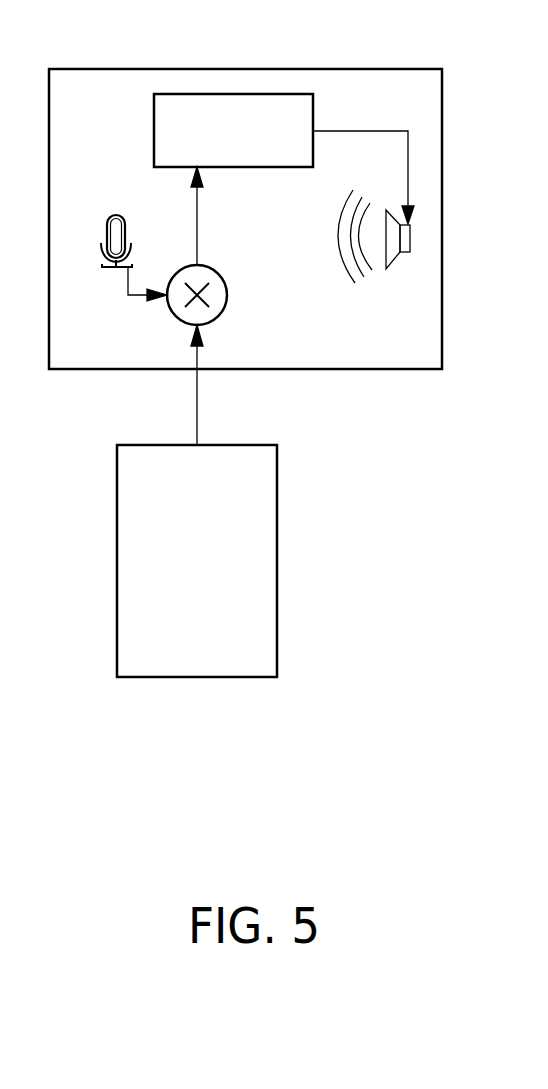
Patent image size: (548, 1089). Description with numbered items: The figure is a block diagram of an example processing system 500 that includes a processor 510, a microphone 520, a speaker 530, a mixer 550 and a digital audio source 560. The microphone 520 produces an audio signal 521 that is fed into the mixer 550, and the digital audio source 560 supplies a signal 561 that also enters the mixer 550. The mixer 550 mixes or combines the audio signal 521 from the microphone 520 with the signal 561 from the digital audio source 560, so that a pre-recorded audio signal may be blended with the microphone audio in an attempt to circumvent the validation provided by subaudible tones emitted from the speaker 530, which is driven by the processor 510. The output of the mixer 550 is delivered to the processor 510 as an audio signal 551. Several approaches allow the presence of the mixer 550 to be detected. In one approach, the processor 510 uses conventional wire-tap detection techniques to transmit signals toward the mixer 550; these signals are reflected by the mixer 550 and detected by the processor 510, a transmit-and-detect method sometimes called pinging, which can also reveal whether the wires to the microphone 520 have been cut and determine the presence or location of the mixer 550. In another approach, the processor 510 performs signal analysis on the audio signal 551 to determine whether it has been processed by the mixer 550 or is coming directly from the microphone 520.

The processing system 500 is at (183, 69).
The processor 510 is at (213, 157).
The microphone 520 is at (107, 216).
The audio signal 521 is at (120, 290).
The speaker 530 is at (405, 253).
The mixer 550 is at (223, 285).
The audio signal 551 is at (199, 212).
The digital audio source 560 is at (177, 603).
The signal 561 is at (199, 405).